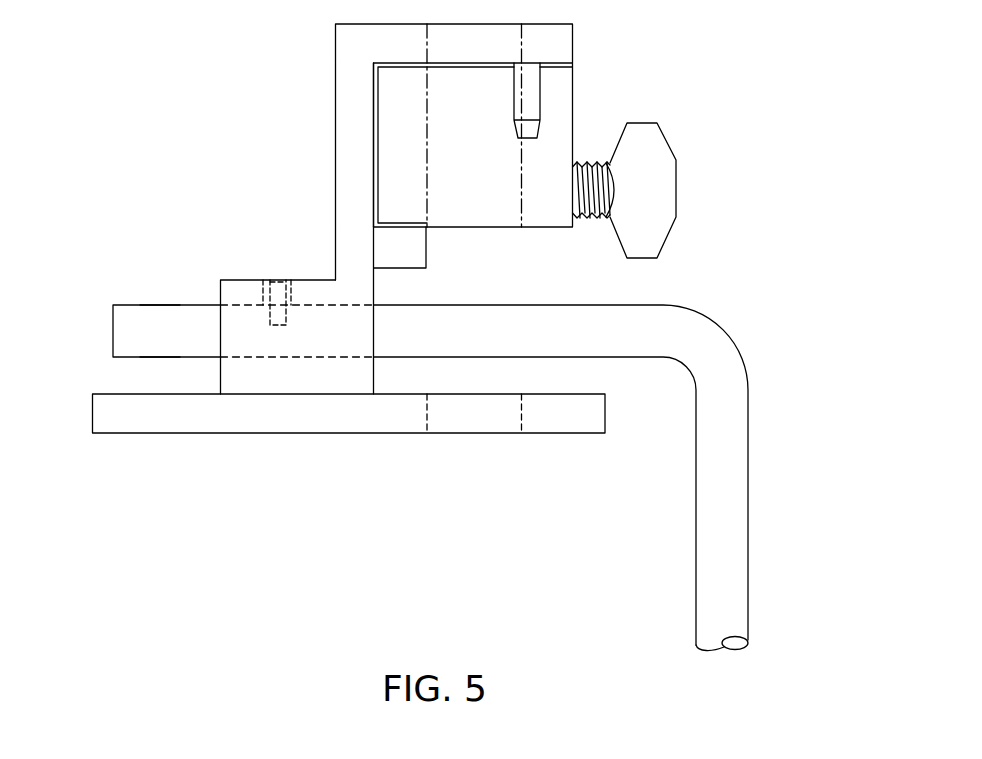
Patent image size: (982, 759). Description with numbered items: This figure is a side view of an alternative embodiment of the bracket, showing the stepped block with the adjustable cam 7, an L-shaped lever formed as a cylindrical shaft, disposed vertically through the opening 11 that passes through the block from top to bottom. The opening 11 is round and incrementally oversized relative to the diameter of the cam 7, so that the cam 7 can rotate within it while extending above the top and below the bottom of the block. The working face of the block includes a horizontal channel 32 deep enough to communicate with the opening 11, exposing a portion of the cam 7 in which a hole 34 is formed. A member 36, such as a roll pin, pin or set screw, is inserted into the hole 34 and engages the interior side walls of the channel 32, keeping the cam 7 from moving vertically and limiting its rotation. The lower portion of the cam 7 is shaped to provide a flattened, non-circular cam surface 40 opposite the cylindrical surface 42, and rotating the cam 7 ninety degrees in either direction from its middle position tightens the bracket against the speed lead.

The adjustable cam 7 is at (100, 328).
The opening 11 is at (267, 356).
The cylindrical surface 42 is at (160, 304).
The cam surface 40 is at (159, 360).
The horizontal channel 32 is at (263, 283).
The hole 34 is at (288, 312).
The member 36 is at (278, 282).